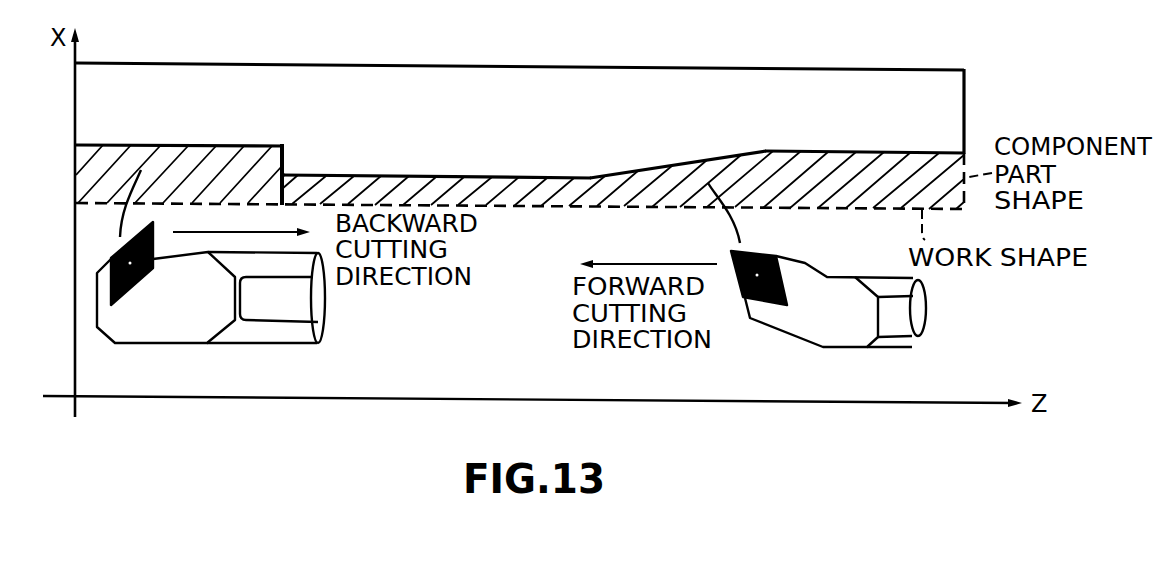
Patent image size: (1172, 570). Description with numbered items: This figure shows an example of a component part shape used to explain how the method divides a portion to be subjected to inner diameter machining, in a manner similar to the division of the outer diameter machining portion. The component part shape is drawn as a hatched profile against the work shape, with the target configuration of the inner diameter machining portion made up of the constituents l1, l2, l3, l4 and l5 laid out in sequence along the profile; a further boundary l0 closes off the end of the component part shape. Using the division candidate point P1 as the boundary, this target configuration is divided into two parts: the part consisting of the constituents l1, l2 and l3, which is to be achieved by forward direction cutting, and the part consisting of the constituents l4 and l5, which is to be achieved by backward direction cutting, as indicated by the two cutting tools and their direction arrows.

The end face position of component part shape l0 is at (948, 111).
The constituent l1 is at (865, 141).
The constituent l2 is at (678, 159).
The constituent l3 is at (436, 165).
The constituent l4 is at (296, 174).
The constituent l5 is at (179, 133).
The division candidate point P1 is at (285, 174).